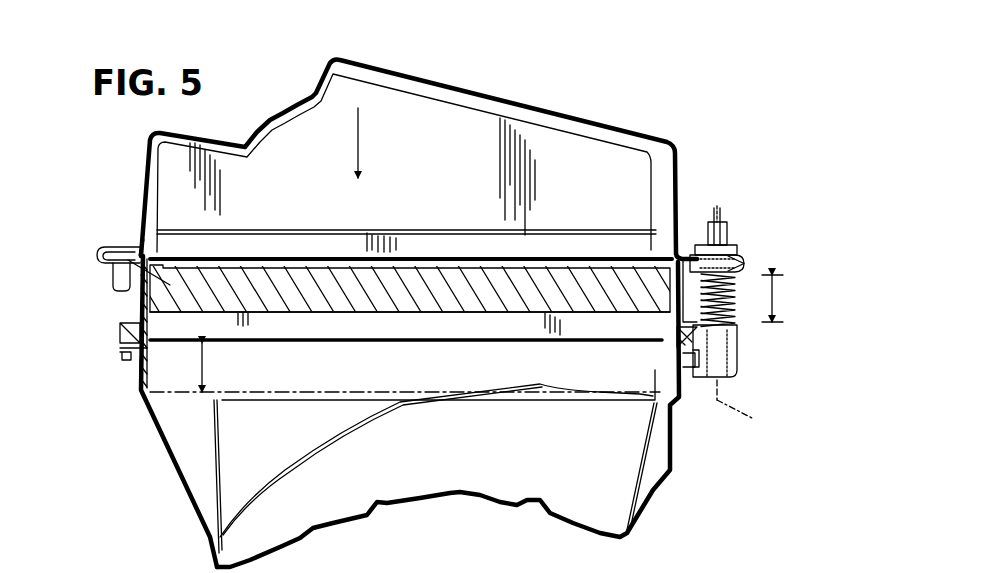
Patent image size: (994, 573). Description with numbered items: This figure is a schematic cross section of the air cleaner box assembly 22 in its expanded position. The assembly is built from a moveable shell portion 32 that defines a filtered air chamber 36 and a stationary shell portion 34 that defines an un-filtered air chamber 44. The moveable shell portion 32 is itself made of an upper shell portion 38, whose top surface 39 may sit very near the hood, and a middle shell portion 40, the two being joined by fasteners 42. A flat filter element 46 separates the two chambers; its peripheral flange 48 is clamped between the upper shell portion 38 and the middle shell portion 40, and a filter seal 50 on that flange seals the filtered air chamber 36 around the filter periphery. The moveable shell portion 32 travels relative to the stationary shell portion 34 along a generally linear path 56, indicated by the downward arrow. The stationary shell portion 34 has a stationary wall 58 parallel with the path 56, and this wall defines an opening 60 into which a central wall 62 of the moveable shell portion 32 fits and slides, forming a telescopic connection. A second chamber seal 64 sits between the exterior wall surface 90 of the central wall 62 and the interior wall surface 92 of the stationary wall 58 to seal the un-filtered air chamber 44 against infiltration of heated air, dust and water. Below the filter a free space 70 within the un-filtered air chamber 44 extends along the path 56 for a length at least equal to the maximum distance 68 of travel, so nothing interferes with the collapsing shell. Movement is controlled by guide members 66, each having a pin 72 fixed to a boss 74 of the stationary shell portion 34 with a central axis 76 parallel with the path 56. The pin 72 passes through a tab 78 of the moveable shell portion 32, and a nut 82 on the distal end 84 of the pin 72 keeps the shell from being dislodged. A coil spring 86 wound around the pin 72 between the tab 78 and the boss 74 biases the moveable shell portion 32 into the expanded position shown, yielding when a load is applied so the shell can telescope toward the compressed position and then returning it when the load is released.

The air cleaner box assembly 22 is at (593, 60).
The moveable shell portion 32 is at (636, 126).
The stationary shell portion 34 is at (682, 418).
The filtered air chamber 36 is at (480, 188).
The upper shell portion 38 is at (681, 172).
The top surface 39 is at (471, 84).
The middle shell portion 40 is at (746, 262).
The fasteners 42 is at (110, 248).
The un-filtered air chamber 44 is at (275, 445).
The filter element 46 is at (404, 284).
The peripheral flange 48 is at (133, 260).
The filter seal 50 is at (140, 253).
The path 56 is at (358, 140).
The stationary wall 58 is at (130, 386).
The opening 60 is at (122, 350).
The central wall 62 is at (140, 305).
The second chamber seal 64 is at (150, 332).
The guide members 66 is at (731, 228).
The maximum distance 68 is at (205, 360).
The free space 70 is at (337, 376).
The pin 72 is at (731, 236).
The boss 74 is at (739, 346).
The central axis 76 is at (748, 403).
The tab 78 is at (746, 268).
The nut 82 is at (741, 250).
The distal end 84 is at (719, 214).
The spring 86 is at (736, 320).
The exterior wall surface 90 is at (125, 325).
The interior wall surface 92 is at (141, 368).